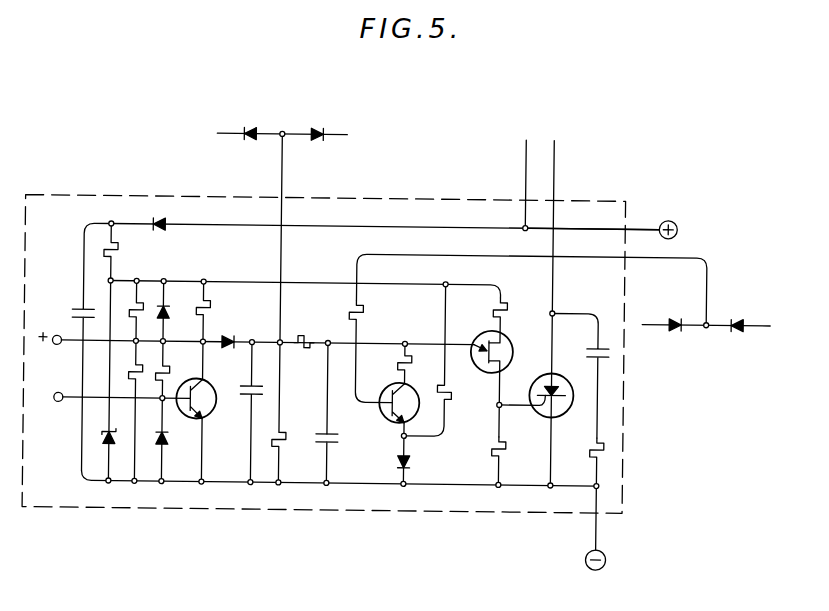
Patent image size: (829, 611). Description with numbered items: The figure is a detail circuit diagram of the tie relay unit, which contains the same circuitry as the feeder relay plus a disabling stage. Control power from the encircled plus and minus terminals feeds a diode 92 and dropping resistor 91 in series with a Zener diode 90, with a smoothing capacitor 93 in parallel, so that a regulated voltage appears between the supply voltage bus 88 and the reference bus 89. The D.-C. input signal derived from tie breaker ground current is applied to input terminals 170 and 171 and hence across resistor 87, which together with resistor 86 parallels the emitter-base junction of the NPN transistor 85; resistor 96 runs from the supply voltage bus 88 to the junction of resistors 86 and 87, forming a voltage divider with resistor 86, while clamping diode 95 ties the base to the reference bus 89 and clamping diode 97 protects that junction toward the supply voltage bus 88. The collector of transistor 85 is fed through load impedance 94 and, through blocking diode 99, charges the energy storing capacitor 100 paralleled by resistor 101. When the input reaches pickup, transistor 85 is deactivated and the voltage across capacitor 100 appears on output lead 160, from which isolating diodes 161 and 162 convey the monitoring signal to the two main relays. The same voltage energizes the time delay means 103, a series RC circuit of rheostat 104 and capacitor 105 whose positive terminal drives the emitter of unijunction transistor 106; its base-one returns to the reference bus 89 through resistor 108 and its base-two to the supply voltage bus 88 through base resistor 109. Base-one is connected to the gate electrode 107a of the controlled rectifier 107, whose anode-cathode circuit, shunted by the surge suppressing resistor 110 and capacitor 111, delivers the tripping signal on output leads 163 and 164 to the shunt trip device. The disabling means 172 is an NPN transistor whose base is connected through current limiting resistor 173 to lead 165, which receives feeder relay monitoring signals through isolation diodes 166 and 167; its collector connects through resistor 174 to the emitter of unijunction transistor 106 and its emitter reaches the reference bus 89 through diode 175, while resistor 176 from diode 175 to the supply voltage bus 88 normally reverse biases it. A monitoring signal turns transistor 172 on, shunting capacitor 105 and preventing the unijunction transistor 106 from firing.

The NPN transistor 85 is at (212, 412).
The resistor 86 is at (131, 377).
The resistor 87 is at (171, 372).
The supply voltage bus 88 is at (128, 282).
The reference bus 89 is at (124, 484).
The voltage stabilizing element 90 is at (105, 438).
The dropping resistor 91 is at (118, 252).
The diode 92 is at (162, 221).
The smoothing capacitor 93 is at (80, 308).
The load impedance 94 is at (210, 308).
The clamping diode 95 is at (170, 440).
The resistor 96 is at (131, 312).
The clamping diode 97 is at (169, 314).
The blocking diode 99 is at (231, 337).
The capacitor 100 is at (245, 386).
The resistor 101 is at (285, 432).
The time delay means 103 is at (306, 387).
The rheostat 104 is at (301, 336).
The capacitor 105 is at (336, 441).
The unijunction transistor 106 is at (512, 340).
The controlled rectifier 107 is at (568, 377).
The gate electrode 107a is at (540, 406).
The resistor 108 is at (510, 448).
The base resistor 109 is at (508, 306).
The resistor 110 is at (590, 448).
The capacitor 111 is at (590, 346).
The output lead 160 is at (282, 170).
The isolating diode 161 is at (248, 126).
The isolating diode 162 is at (315, 126).
The output lead 163 is at (553, 160).
The output lead 164 is at (524, 161).
The lead 165 is at (676, 256).
The isolation diode 166 is at (673, 329).
The isolation diode 167 is at (740, 329).
The input terminal 170 is at (89, 356).
The input terminal 171 is at (103, 413).
The disabling means 172 is at (382, 410).
The current limiting resistor 173 is at (364, 315).
The resistor 174 is at (397, 364).
The diode 175 is at (413, 463).
The resistor 176 is at (453, 392).